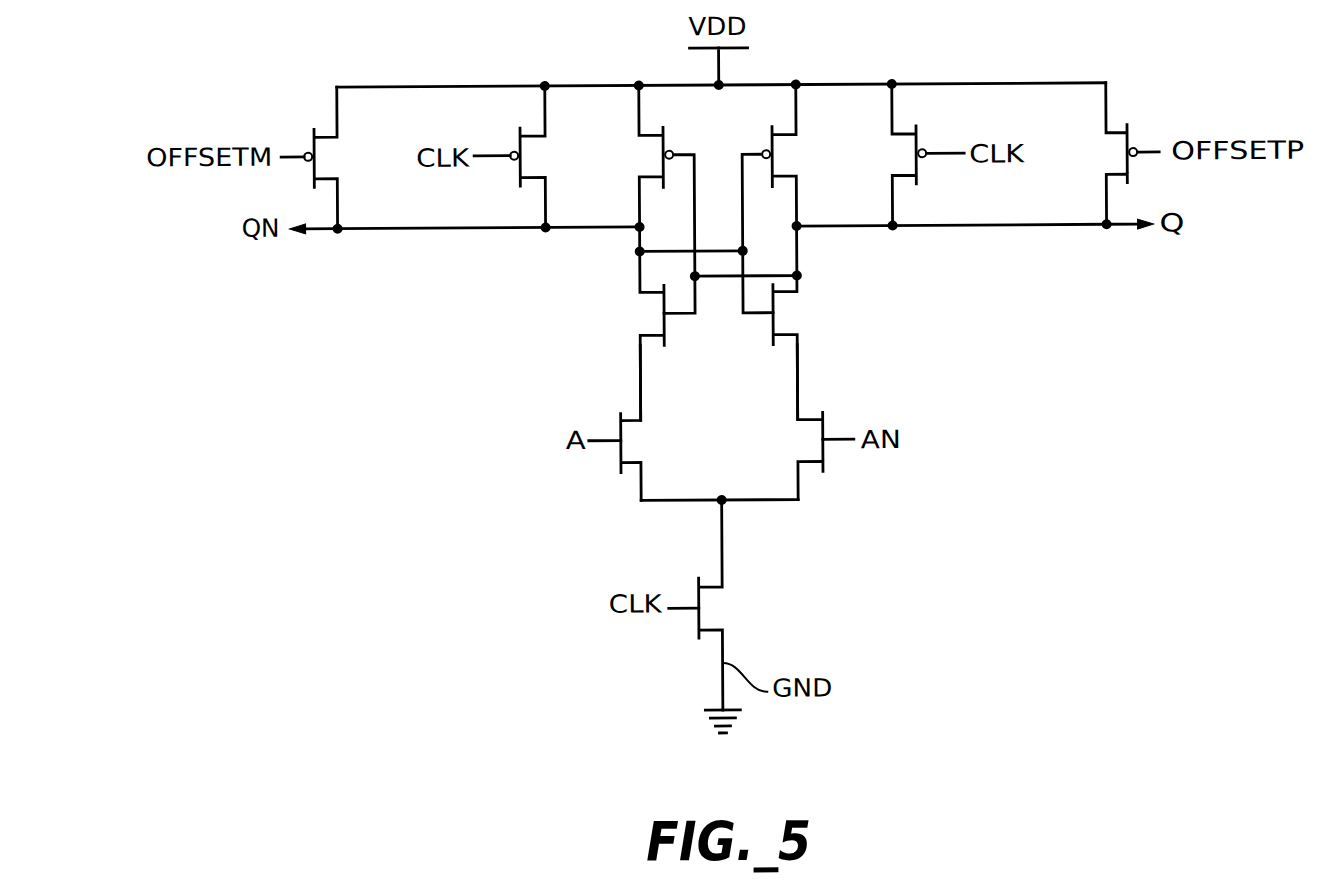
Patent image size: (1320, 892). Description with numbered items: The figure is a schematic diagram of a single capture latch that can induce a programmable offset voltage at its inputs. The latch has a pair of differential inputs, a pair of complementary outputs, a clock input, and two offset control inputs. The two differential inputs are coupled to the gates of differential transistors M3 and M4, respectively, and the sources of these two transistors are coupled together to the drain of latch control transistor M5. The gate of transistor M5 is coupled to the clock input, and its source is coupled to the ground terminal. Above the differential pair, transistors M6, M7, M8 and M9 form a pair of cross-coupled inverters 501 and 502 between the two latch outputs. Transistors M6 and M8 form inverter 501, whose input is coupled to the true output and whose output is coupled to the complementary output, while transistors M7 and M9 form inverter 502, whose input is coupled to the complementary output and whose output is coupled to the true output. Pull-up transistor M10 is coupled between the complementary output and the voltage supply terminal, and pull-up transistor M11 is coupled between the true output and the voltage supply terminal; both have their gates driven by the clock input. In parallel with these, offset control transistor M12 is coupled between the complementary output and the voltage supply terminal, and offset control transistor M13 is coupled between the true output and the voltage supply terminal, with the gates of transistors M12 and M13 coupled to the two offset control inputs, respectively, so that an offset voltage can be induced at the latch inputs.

The inverter 501 is at (703, 132).
The inverter 502 is at (735, 132).
The differential transistor M3 is at (637, 423).
The differential transistor M4 is at (806, 422).
The latch control transistor M5 is at (717, 605).
The transistor M6 is at (635, 324).
The transistor M7 is at (804, 323).
The transistor M8 is at (639, 156).
The transistor M9 is at (798, 155).
The pull-up transistor M10 is at (539, 157).
The pull-up transistor M11 is at (898, 155).
The offset control transistor M12 is at (339, 158).
The offset control transistor M13 is at (1101, 153).